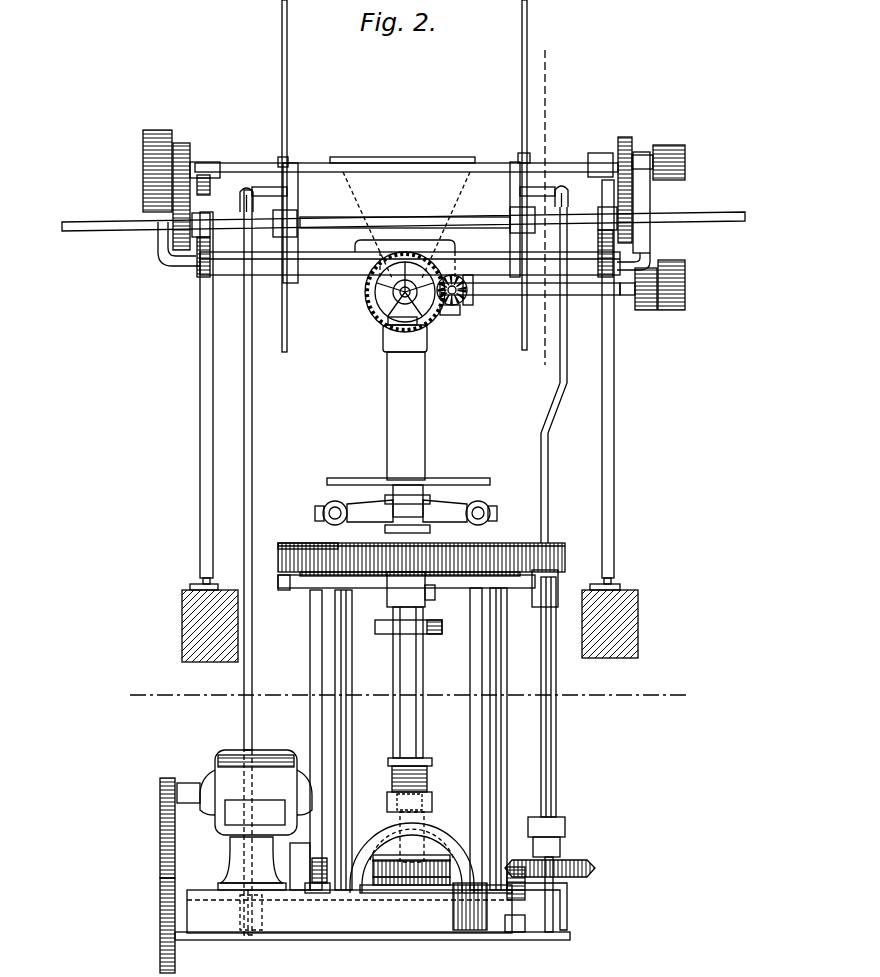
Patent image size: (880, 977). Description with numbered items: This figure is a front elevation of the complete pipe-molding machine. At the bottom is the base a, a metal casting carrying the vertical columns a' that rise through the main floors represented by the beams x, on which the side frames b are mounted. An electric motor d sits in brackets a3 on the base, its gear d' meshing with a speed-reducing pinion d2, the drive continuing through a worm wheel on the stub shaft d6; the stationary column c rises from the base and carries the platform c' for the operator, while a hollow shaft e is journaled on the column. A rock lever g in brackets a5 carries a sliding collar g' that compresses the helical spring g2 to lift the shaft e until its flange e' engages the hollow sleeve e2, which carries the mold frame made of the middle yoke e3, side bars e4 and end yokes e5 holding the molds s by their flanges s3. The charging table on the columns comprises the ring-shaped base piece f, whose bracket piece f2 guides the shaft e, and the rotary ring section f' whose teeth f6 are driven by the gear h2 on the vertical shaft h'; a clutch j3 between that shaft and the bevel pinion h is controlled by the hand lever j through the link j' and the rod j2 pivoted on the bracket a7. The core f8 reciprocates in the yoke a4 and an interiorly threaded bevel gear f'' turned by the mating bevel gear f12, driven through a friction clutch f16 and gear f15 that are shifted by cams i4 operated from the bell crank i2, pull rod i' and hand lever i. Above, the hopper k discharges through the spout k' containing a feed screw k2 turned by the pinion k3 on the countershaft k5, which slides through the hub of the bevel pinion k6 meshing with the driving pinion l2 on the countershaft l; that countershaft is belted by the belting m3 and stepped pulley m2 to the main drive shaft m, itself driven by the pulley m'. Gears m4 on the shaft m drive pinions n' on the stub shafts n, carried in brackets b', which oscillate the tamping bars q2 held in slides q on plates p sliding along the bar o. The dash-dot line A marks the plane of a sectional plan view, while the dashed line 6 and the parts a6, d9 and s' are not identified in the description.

The base a is at (349, 930).
The vertical columns a' is at (402, 739).
The brackets a3 is at (222, 860).
The yoke a4 is at (443, 837).
The brackets a5 is at (376, 830).
The rack a6 is at (524, 930).
The bracket a7 is at (567, 898).
The side frames b is at (398, 379).
The brackets b' is at (405, 255).
The stationary column c is at (418, 485).
The platform c' is at (408, 469).
The electric motor d is at (244, 780).
The gear d' is at (170, 815).
The speed reducing pinion d2 is at (160, 860).
The stub shaft d6 is at (450, 893).
The worm gear d9 is at (432, 880).
The hollow shaft e is at (416, 682).
The flange e' is at (404, 637).
The hollow sleeve e2 is at (390, 612).
The middle yoke section e3 is at (445, 505).
The side bars e4 is at (326, 505).
The end yokes e5 is at (385, 500).
The ring-shaped base piece f is at (406, 590).
The rotary ring section f' is at (308, 532).
The bracket piece f2 is at (435, 594).
The gear teeth f6 is at (284, 591).
The mold core f8 is at (388, 322).
The interiorly threaded bevel gear f'' is at (443, 836).
The mating bevel gear f12 is at (396, 940).
The gear f15 is at (318, 890).
The friction clutch f16 is at (300, 843).
The rock lever g is at (422, 826).
The sliding collar g' is at (425, 779).
The helical spring g2 is at (432, 762).
The bevel pinion h is at (553, 864).
The vertical shaft h' is at (565, 697).
The gear h2 is at (566, 548).
The hand lever i is at (263, 177).
The pull rod i' is at (476, 562).
The bell crank i2 is at (262, 940).
The cams i4 is at (318, 884).
The hand lever j is at (544, 174).
The link j' is at (563, 375).
The rod j2 is at (566, 826).
The clutch j3 is at (561, 848).
The hopper k is at (402, 207).
The discharge spout k' is at (404, 279).
The feed screw k2 is at (378, 304).
The pinion k3 is at (365, 292).
The countershaft k5 is at (458, 280).
The bevel pinion k6 is at (450, 316).
The countershaft l is at (577, 295).
The driving pinion l2 is at (474, 302).
The main drive shaft m is at (406, 154).
The pulley m' is at (161, 155).
The stepped pulley m2 is at (685, 152).
The belting m3 is at (650, 206).
The driving gears m4 is at (190, 152).
The stub shaft n is at (403, 218).
The pinion n' is at (369, 223).
The parallel bar o is at (470, 218).
The plates p is at (410, 229).
The metal slide q is at (298, 163).
The tamping bars q2 is at (288, 136).
The molds s is at (414, 416).
The cap s' is at (415, 345).
The horizontal flange s3 is at (432, 530).
The beams x is at (182, 625).
The line 6 is at (546, 213).
The section line A is at (408, 699).